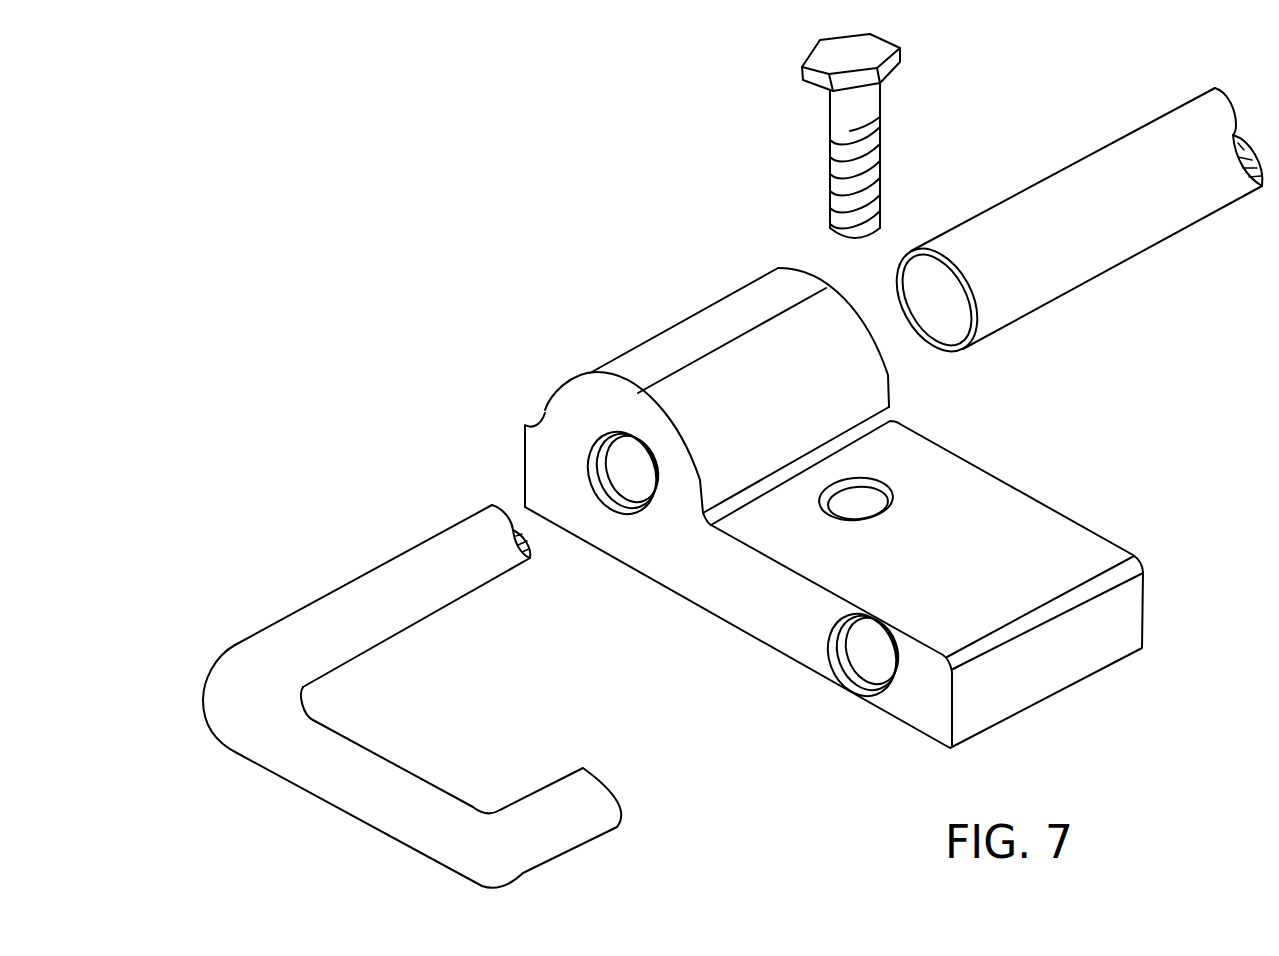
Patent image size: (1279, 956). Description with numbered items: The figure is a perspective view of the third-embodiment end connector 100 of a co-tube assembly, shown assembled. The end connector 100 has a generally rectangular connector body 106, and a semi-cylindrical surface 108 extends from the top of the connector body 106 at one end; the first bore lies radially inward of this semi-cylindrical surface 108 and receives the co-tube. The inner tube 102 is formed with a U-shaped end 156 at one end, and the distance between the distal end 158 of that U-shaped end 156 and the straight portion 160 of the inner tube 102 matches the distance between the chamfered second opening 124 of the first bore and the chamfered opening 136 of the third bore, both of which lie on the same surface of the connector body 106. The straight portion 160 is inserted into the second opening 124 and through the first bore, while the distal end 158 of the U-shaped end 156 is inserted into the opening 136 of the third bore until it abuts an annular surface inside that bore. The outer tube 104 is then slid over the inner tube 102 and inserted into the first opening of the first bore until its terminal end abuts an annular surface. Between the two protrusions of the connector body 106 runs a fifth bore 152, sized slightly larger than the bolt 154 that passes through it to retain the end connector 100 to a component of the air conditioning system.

The end connector 100 is at (834, 582).
The inner tube 102 is at (450, 696).
The outer tube 104 is at (1078, 182).
The connector body 106 is at (990, 493).
The semi-cylindrical surface 108 is at (682, 396).
The chamfered second opening 124 is at (622, 475).
The chamfered opening 136 is at (877, 660).
The fifth bore 152 is at (898, 495).
The bolt 154 is at (880, 127).
The U-shaped end 156 is at (335, 782).
The distal end 158 is at (608, 797).
The straight portion 160 is at (380, 587).